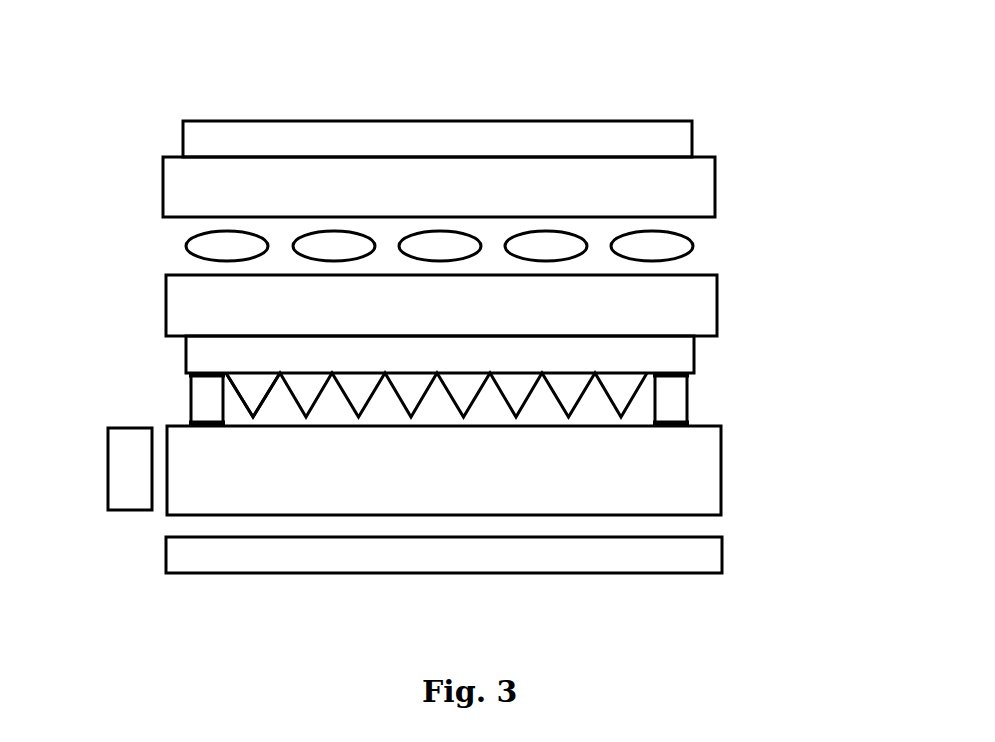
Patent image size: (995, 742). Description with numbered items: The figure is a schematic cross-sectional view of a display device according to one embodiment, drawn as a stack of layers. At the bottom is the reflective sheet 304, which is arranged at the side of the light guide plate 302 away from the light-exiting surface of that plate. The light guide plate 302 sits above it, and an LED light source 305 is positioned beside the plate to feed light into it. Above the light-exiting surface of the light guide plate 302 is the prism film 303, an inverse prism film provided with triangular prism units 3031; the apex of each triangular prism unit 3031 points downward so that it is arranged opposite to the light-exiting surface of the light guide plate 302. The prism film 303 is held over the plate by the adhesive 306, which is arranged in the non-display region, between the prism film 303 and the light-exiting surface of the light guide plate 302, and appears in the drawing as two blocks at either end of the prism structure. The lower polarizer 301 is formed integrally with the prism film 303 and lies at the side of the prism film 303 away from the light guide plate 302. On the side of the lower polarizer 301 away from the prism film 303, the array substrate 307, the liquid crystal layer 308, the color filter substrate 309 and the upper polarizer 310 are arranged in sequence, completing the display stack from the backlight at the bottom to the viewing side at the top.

The lower polarizer 301 is at (655, 355).
The light guide plate 302 is at (683, 483).
The prism film 303 is at (622, 374).
The triangular prism unit 3031 is at (253, 384).
The reflective sheet 304 is at (650, 558).
The LED light source 305 is at (129, 494).
The adhesive 306 is at (673, 409).
The array substrate 307 is at (693, 304).
The liquid crystal layer 308 is at (669, 247).
The color filter substrate 309 is at (687, 172).
The upper polarizer 310 is at (573, 135).